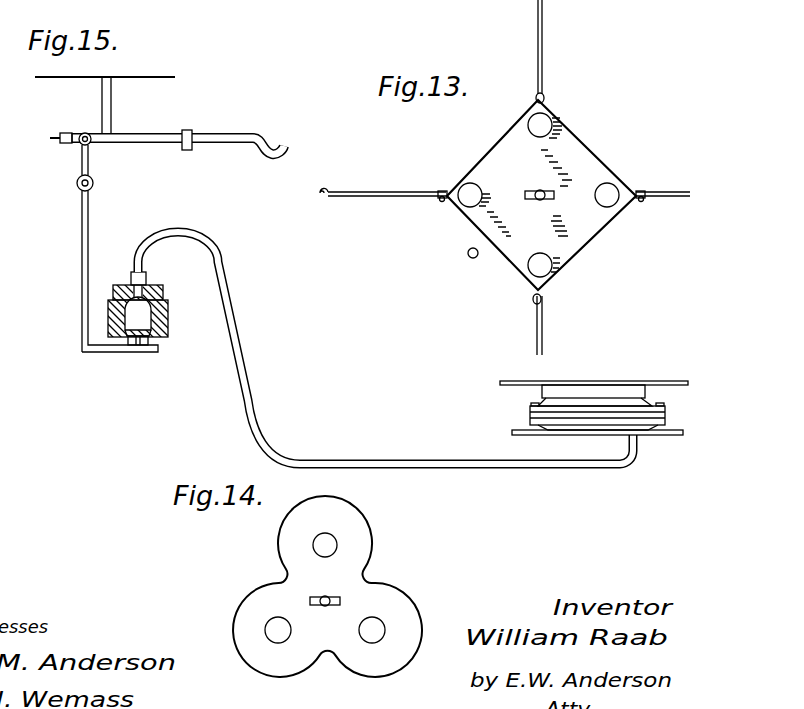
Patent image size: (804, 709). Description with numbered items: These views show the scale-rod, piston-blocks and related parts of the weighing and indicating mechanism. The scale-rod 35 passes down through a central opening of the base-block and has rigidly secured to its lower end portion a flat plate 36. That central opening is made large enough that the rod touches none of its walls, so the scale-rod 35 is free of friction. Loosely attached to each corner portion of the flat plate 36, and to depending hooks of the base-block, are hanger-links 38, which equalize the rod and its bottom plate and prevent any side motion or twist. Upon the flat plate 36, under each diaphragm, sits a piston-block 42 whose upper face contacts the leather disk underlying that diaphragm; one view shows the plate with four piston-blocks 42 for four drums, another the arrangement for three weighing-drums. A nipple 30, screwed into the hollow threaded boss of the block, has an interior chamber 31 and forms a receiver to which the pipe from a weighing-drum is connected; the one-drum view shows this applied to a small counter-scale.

In FIG. 15, the nipple 30 is at (168, 290).
In FIG. 15, the interior chamber 31 is at (138, 316).
In FIG. 13, the scale-rod 35 is at (540, 190).
In FIG. 14, the scale-rod 35 is at (325, 596).
In FIG. 13, the flat plate 36 is at (541, 195).
In FIG. 14, the flat plate 36 is at (368, 543).
In FIG. 13, the hanger-links 38 is at (542, 43).
In FIG. 13, the piston-block 42 is at (561, 251).
In FIG. 14, the piston-block 42 is at (329, 536).
In FIG. 15, the piston-block 42 is at (160, 338).